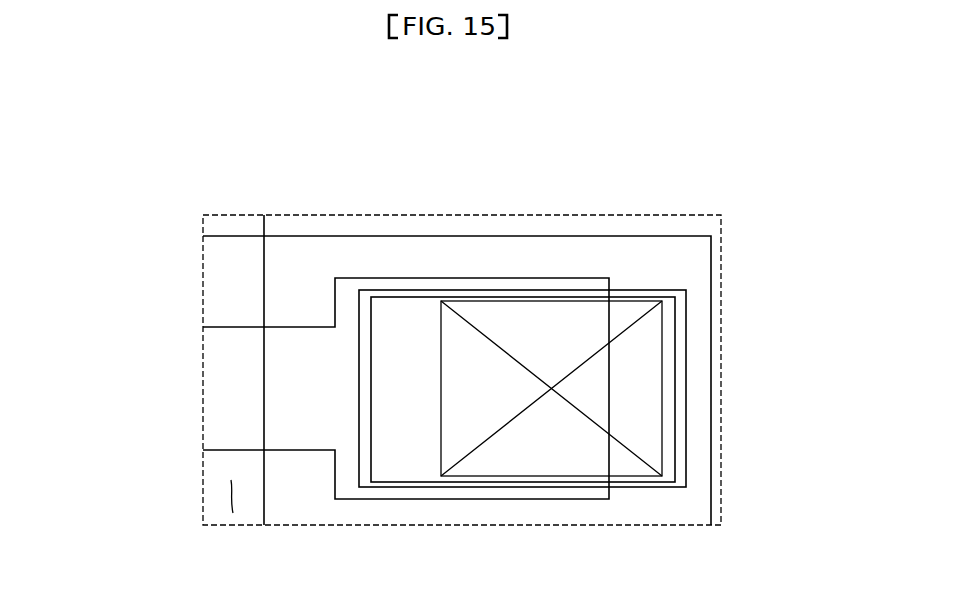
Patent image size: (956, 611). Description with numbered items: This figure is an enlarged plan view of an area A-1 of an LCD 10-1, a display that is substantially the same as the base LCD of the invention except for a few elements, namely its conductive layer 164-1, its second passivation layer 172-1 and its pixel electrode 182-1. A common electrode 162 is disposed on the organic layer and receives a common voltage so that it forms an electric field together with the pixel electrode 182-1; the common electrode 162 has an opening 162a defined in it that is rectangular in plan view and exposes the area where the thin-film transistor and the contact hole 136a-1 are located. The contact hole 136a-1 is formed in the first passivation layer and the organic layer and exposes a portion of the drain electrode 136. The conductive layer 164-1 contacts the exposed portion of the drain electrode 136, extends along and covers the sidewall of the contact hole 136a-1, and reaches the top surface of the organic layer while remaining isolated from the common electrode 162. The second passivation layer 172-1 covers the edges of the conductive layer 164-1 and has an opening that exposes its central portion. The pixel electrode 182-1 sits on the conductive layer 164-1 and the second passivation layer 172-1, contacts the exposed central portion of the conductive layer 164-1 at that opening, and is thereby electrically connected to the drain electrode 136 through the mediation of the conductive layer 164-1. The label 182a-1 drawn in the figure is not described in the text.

The LCD 10-1 is at (450, 172).
The area A-1 is at (580, 215).
The drain electrode 136 is at (296, 327).
The contact hole 136a-1 is at (663, 339).
The conductive layer 164-1 is at (687, 399).
The common electrode 162 is at (711, 467).
The opening 162a is at (661, 511).
The second passivation layer 172-1 is at (411, 482).
The pixel electrode 182-1 is at (263, 468).
The second electrode line pad 182a-1 is at (233, 492).